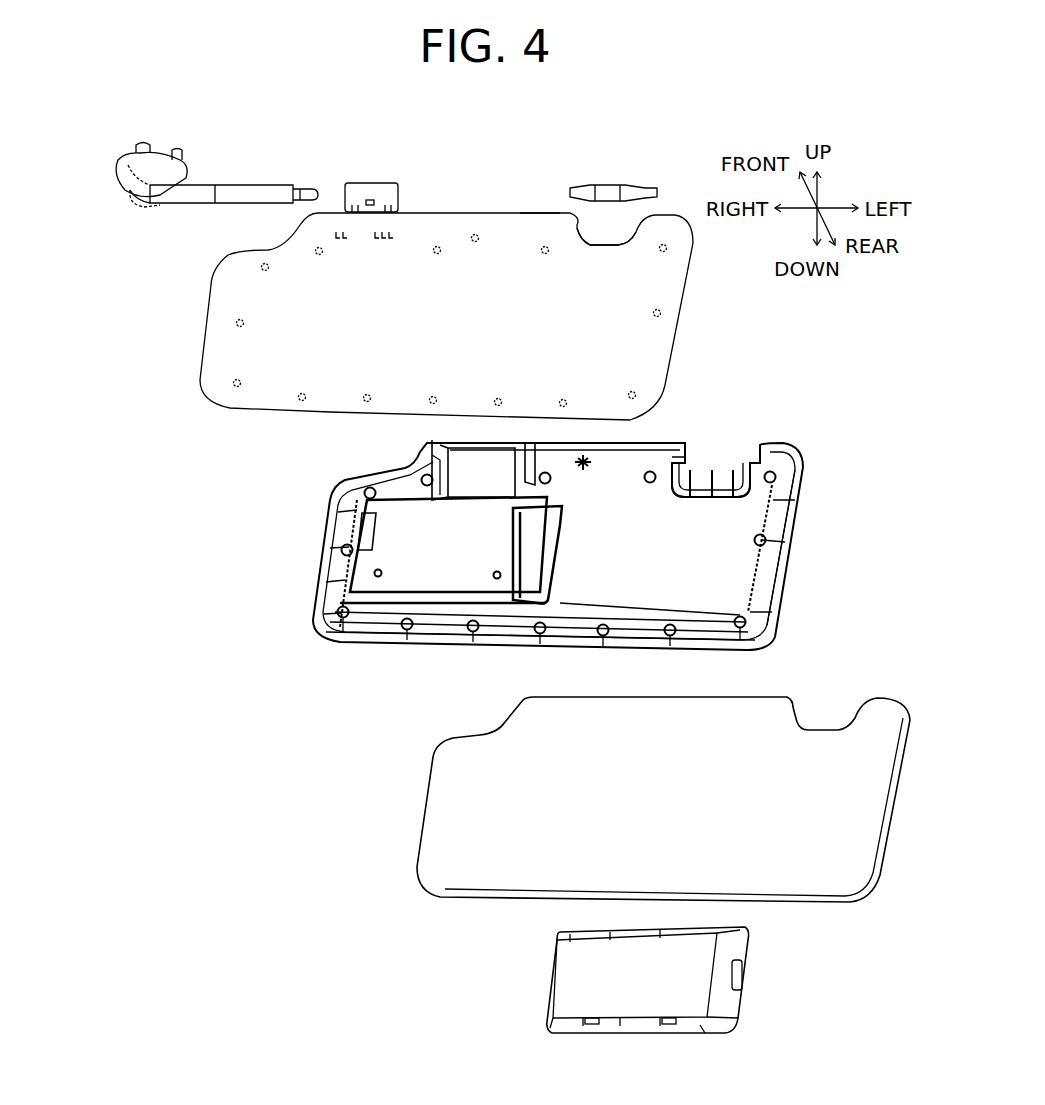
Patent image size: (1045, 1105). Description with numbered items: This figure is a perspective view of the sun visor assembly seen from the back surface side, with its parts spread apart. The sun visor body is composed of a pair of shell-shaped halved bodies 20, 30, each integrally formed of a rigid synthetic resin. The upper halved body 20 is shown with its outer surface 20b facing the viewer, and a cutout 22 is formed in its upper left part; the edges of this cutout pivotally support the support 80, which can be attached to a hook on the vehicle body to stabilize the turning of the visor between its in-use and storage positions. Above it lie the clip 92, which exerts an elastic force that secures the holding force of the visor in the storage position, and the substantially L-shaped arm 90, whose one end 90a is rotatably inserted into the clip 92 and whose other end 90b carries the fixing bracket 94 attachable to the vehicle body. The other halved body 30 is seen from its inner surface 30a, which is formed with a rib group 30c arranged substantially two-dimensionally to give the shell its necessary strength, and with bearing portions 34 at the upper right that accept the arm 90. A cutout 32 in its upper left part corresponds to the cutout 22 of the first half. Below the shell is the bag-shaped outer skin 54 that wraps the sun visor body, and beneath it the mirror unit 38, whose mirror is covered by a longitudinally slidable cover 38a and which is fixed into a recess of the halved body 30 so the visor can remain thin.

The halved body 20 is at (463, 210).
The outer surface 20b is at (502, 247).
The cutout 22 is at (612, 243).
The halved body 30 is at (798, 443).
The inner surface 30a is at (710, 600).
The rib group 30c is at (768, 570).
The cutout 32 is at (717, 463).
The bearing portions 34 is at (512, 458).
The mirror unit 38 is at (682, 968).
The cover 38a is at (738, 998).
The outer skin 54 is at (468, 775).
The support 80 is at (614, 190).
The arm 90 is at (232, 190).
The one end 90a is at (280, 188).
The other end 90b is at (115, 186).
The clip 92 is at (372, 190).
The fixing bracket 94 is at (120, 165).